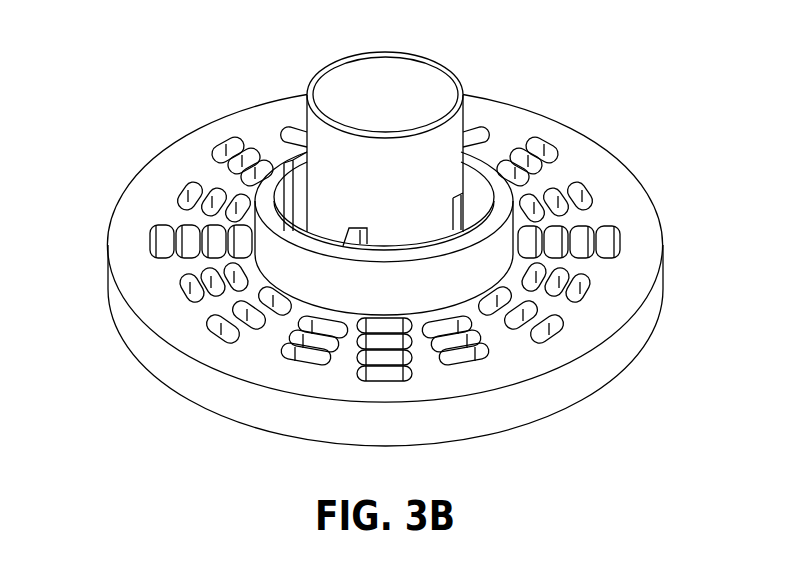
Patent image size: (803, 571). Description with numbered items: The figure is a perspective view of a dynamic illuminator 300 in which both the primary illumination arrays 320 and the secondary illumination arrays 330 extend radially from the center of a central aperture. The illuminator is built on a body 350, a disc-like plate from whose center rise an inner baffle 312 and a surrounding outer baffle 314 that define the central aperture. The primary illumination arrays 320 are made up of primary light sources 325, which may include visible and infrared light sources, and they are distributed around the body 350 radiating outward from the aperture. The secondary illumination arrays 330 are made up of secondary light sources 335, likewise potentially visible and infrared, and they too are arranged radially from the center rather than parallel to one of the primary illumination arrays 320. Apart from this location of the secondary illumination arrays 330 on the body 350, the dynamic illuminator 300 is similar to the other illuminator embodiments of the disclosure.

The dynamic illuminator 300 is at (163, 31).
The inner baffle 312 is at (462, 98).
The outer baffle 314 is at (300, 245).
The primary illumination arrays 320 is at (173, 189).
The primary light sources 325 is at (202, 178).
The secondary illumination arrays 330 is at (148, 234).
The secondary light sources 335 is at (163, 260).
The body 350 is at (613, 280).